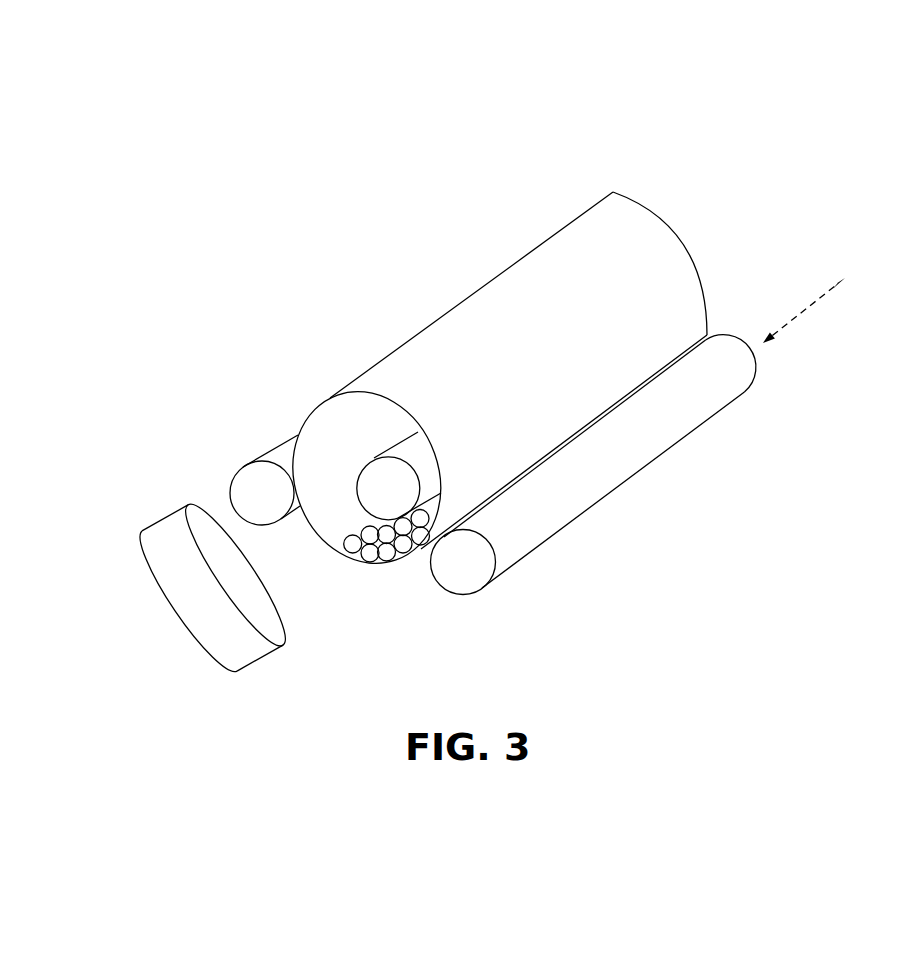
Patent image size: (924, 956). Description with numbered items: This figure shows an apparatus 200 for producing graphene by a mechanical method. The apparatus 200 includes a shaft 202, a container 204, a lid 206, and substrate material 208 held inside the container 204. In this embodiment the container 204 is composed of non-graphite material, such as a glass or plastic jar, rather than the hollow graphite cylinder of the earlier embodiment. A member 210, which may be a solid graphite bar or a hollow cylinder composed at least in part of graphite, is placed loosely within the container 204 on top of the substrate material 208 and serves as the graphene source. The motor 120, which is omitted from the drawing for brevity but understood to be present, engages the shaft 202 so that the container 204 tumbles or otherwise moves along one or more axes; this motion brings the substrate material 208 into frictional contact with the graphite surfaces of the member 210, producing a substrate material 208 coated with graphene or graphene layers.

The apparatus 200 is at (261, 84).
The shaft 202 is at (623, 485).
The container 204 is at (328, 399).
The lid 206 is at (196, 502).
The substrate material 208 is at (386, 562).
The member 210 is at (375, 457).
The motor 120 is at (898, 258).